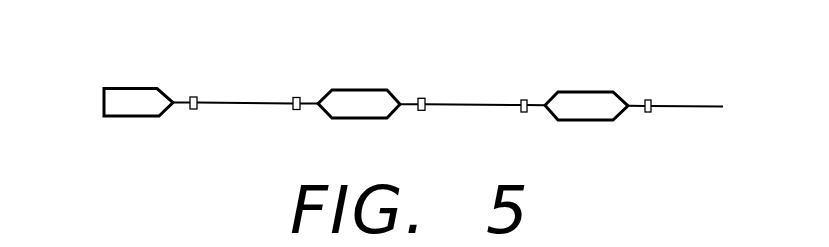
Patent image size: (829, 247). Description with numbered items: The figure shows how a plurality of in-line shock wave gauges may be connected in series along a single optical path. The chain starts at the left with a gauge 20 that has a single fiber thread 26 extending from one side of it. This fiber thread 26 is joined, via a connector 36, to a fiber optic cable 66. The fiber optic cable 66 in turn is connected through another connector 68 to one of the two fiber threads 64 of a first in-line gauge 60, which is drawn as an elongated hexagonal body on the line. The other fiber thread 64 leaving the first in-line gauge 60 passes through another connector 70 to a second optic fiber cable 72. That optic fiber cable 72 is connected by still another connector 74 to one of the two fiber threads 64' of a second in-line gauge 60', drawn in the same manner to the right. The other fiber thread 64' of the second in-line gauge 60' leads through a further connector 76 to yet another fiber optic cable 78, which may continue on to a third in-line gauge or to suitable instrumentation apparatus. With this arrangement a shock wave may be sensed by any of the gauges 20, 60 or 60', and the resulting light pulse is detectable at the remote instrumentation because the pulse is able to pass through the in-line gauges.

The gauge 20 is at (140, 88).
The fiber thread 26 is at (179, 105).
The connector 36 is at (193, 97).
The fiber optic cable 66 is at (243, 102).
The connector 68 is at (296, 98).
The in-line gauge 60 is at (359, 81).
The fiber threads 64 is at (354, 129).
The connector 70 is at (420, 98).
The optic fiber cable 72 is at (468, 104).
The connector 74 is at (523, 100).
The second in-line gauge 60' is at (586, 81).
The fiber threads 64' is at (584, 130).
The connector 76 is at (647, 100).
The fiber optic cable 78 is at (696, 106).